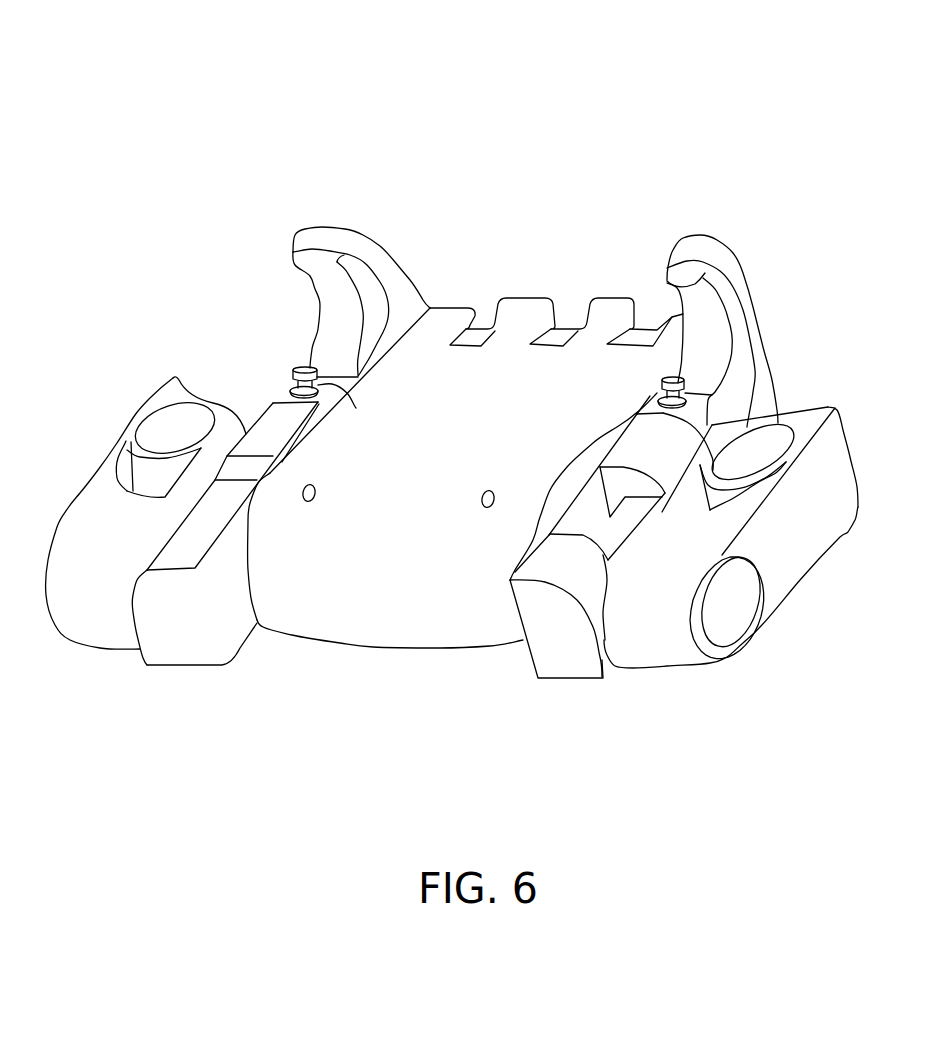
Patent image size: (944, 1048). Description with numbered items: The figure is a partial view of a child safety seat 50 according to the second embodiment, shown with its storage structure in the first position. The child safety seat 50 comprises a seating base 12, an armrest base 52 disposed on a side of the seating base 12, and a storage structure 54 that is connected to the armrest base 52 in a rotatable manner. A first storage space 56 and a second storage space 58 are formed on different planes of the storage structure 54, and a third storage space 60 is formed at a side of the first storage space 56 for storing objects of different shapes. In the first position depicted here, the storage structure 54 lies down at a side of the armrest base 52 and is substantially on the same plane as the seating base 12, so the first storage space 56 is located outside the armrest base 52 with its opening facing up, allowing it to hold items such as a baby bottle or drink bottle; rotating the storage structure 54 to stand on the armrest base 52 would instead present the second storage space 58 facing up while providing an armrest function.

The child safety seat 50 is at (738, 108).
The seating base 12 is at (372, 573).
The armrest base 52 is at (558, 642).
The storage structure 54 is at (663, 613).
The first storage space 56 is at (763, 443).
The second storage space 58 is at (727, 607).
The third storage space 60 is at (690, 507).